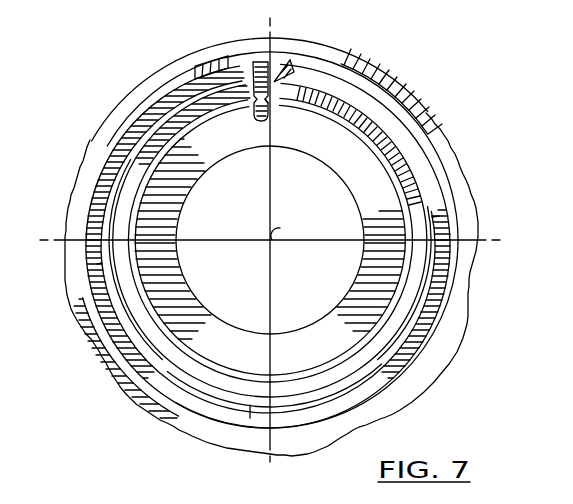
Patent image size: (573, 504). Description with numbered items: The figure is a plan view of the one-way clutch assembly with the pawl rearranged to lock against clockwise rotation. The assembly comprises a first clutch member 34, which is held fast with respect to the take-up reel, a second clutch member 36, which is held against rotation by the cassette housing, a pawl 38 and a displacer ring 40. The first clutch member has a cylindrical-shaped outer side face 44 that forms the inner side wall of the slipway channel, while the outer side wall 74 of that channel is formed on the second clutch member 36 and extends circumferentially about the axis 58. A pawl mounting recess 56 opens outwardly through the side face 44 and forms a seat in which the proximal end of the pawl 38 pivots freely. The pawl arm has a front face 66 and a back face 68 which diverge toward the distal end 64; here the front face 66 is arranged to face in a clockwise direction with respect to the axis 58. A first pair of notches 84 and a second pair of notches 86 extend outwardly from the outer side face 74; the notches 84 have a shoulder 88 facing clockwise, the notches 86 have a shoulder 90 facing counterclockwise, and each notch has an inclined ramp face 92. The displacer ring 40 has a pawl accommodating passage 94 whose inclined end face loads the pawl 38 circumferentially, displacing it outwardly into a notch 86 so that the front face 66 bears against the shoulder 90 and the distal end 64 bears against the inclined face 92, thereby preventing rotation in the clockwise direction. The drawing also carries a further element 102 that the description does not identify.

The first clutch member 34 is at (182, 221).
The second clutch member 36 is at (80, 190).
The pawl 38 is at (259, 128).
The displacer ring 40 is at (138, 352).
The cylindrical-shaped outer side face 44 is at (182, 262).
The pawl mounting recess 56 is at (247, 108).
The axis 58 is at (281, 227).
The distal end 64 is at (337, 57).
The front face 66 is at (287, 117).
The back face 68 is at (228, 64).
The outer side wall 74 is at (126, 162).
The first pair of notches 84 is at (100, 256).
The second pair of notches 86 is at (258, 62).
The shoulder 88 is at (90, 282).
The shoulder 90 is at (147, 128).
The inclined ramp face 92 is at (282, 72).
The pawl accommodating passage 94 is at (184, 54).
The joint 102 is at (112, 310).